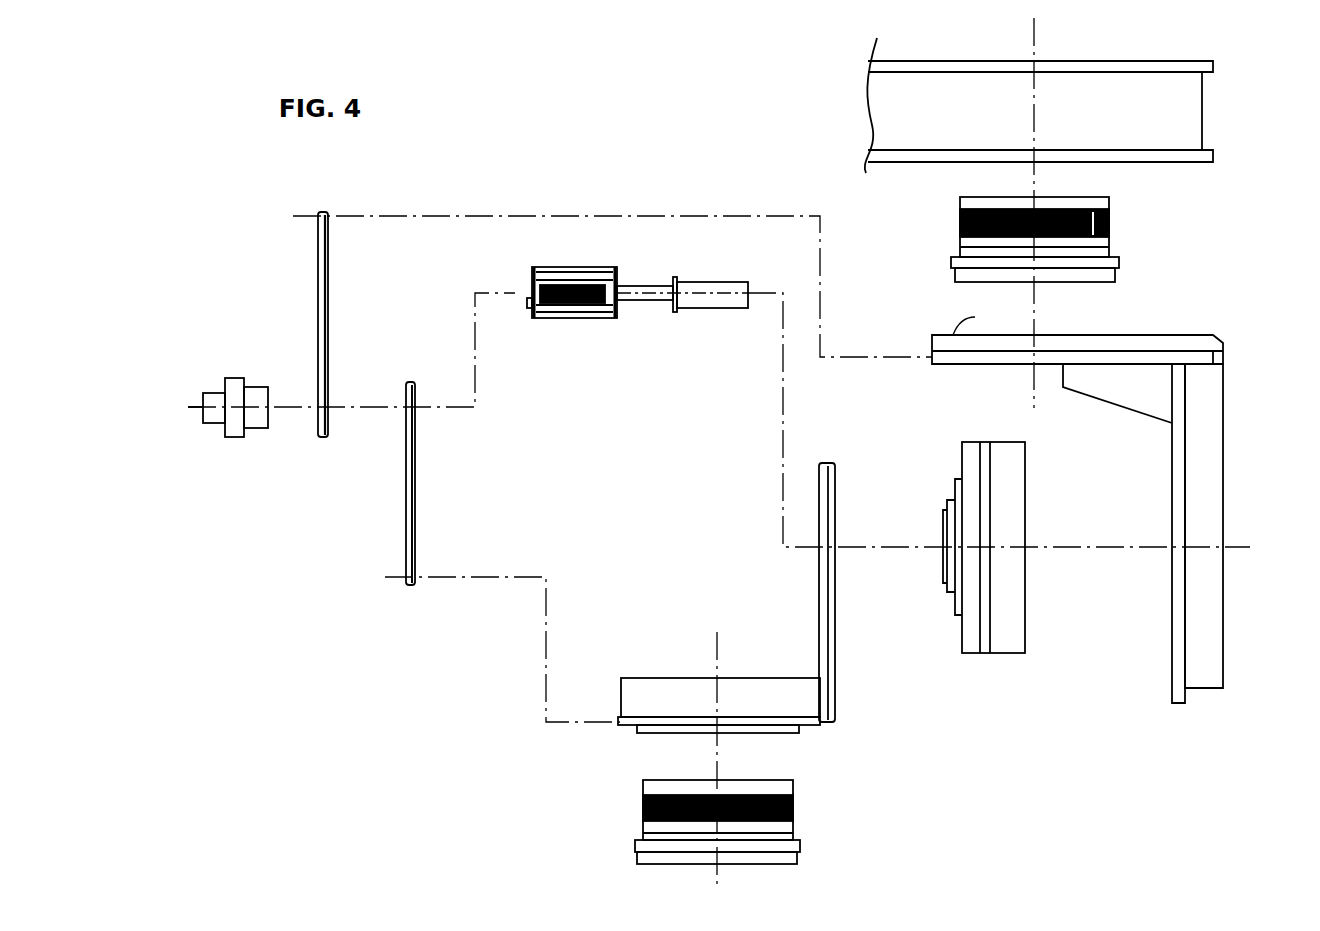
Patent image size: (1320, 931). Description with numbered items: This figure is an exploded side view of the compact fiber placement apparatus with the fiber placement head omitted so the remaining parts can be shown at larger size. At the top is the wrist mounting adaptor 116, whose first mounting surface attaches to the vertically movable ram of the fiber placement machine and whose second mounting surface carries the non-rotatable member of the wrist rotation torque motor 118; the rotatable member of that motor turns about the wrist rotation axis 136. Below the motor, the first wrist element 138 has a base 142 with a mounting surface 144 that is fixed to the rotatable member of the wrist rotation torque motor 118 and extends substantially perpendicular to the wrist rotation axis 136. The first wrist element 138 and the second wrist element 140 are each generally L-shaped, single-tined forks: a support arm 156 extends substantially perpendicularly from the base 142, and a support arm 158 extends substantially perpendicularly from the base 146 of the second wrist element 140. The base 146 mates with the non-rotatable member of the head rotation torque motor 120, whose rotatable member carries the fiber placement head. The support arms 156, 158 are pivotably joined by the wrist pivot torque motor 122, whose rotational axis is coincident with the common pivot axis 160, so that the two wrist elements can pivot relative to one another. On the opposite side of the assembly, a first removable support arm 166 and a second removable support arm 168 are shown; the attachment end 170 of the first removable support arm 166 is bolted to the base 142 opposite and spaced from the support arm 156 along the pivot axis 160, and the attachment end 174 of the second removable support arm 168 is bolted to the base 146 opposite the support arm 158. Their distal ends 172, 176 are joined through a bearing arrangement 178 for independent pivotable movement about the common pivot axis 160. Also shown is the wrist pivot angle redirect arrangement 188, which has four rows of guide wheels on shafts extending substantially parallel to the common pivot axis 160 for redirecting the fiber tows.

The wrist mounting adaptor 116 is at (1178, 117).
The wrist rotation torque motor 118 is at (1110, 218).
The head rotation torque motor 120 is at (793, 805).
The wrist pivot torque motor 122 is at (1013, 602).
The wrist rotation axis 136 is at (1036, 30).
The first wrist element 138 is at (1210, 487).
The second wrist element 140 is at (675, 692).
The base of the first wrist element 142 is at (1190, 335).
The mounting surface 144 is at (975, 317).
The base of the second wrist element 146 is at (808, 698).
The support arm of the first wrist element 156 is at (1172, 690).
The support arm of the second wrist element 158 is at (826, 613).
The common pivot axis 160 is at (1090, 547).
The first removable support arm 166 is at (328, 272).
The second removable support arm 168 is at (406, 507).
The attachment end of the first removable support arm 170 is at (318, 232).
The distal end of the first removable support arm 172 is at (320, 440).
The attachment end of the second removable support arm 174 is at (415, 575).
The distal end of the second removable support arm 176 is at (414, 393).
The bearing arrangement 178 is at (225, 382).
The wrist pivot angle redirect arrangement 188 is at (571, 338).